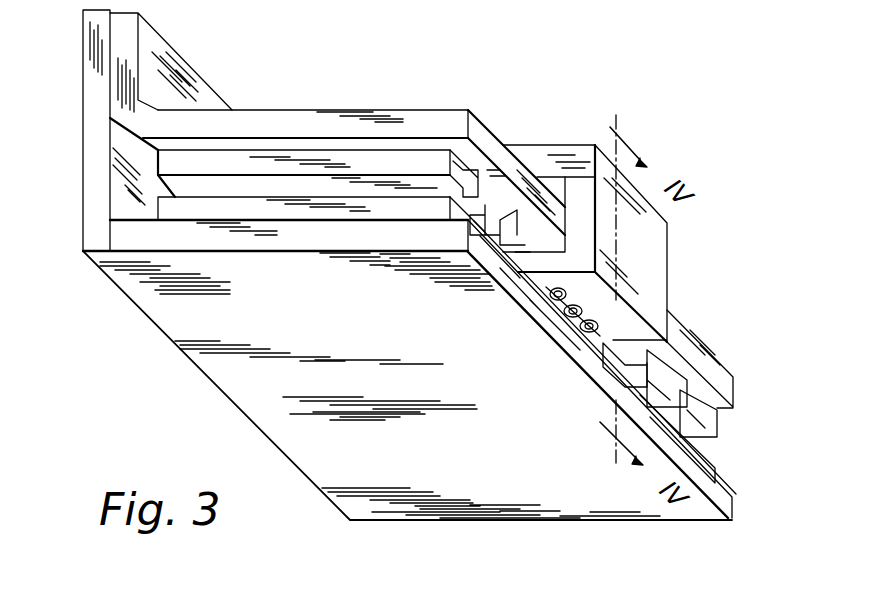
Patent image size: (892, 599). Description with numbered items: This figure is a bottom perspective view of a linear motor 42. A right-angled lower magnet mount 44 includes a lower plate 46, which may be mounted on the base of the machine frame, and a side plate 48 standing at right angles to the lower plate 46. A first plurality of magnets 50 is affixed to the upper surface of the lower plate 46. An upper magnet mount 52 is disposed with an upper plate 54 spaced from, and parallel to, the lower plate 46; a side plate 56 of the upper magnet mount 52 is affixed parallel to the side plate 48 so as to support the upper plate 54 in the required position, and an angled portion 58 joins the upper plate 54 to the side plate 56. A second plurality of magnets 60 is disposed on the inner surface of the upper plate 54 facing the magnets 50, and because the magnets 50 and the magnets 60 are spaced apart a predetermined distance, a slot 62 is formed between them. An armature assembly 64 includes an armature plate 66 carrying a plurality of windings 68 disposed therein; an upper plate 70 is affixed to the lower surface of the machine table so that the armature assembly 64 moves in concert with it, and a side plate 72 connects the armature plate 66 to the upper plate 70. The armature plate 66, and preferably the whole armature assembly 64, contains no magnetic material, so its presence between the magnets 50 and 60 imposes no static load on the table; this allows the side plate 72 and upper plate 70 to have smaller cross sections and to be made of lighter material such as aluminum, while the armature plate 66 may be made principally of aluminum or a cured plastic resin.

The linear motor 42 is at (700, 144).
The lower magnet mount 44 is at (100, 192).
The lower plate 46 is at (698, 507).
The side plate 48 is at (95, 84).
The first plurality of magnets 50 is at (335, 210).
The upper magnet mount 52 is at (255, 118).
The upper plate 54 is at (423, 120).
The side plate 56 is at (125, 53).
The angled portion 58 is at (137, 113).
The second plurality of magnets 60 is at (460, 170).
The slot 62 is at (705, 448).
The armature assembly 64 is at (680, 277).
The armature plate 66 is at (613, 338).
The windings 68 is at (555, 298).
The upper plate 70 is at (537, 157).
The side plate 72 is at (650, 253).